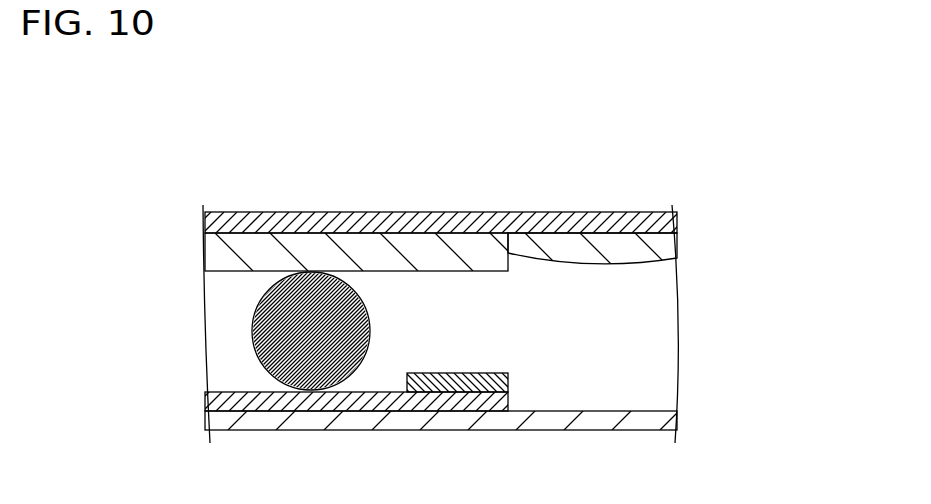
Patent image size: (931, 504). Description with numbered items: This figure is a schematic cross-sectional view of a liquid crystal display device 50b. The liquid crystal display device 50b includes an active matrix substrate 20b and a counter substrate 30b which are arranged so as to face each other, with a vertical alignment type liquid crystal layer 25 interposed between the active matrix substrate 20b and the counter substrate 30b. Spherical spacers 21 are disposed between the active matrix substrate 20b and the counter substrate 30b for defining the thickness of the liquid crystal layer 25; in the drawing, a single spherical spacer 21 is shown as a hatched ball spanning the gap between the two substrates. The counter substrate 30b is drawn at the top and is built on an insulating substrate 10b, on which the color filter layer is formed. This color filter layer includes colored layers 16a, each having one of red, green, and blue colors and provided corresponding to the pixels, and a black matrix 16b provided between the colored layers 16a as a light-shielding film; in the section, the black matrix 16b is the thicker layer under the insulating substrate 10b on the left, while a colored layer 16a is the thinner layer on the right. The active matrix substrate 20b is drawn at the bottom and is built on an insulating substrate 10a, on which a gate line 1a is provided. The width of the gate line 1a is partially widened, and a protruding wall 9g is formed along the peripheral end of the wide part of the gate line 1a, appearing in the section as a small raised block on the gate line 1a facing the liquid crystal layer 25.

The liquid crystal display device 50b is at (226, 151).
The counter substrate 30b is at (445, 208).
The active matrix substrate 20b is at (445, 405).
The insulating substrate 10b is at (672, 224).
The insulating substrate 10a is at (672, 412).
The black matrix 16b is at (425, 252).
The colored layer 16a is at (577, 246).
The spherical spacer 21 is at (273, 330).
The protruding wall 9g is at (508, 380).
The gate line 1a is at (508, 401).
The liquid crystal layer 25 is at (685, 253).